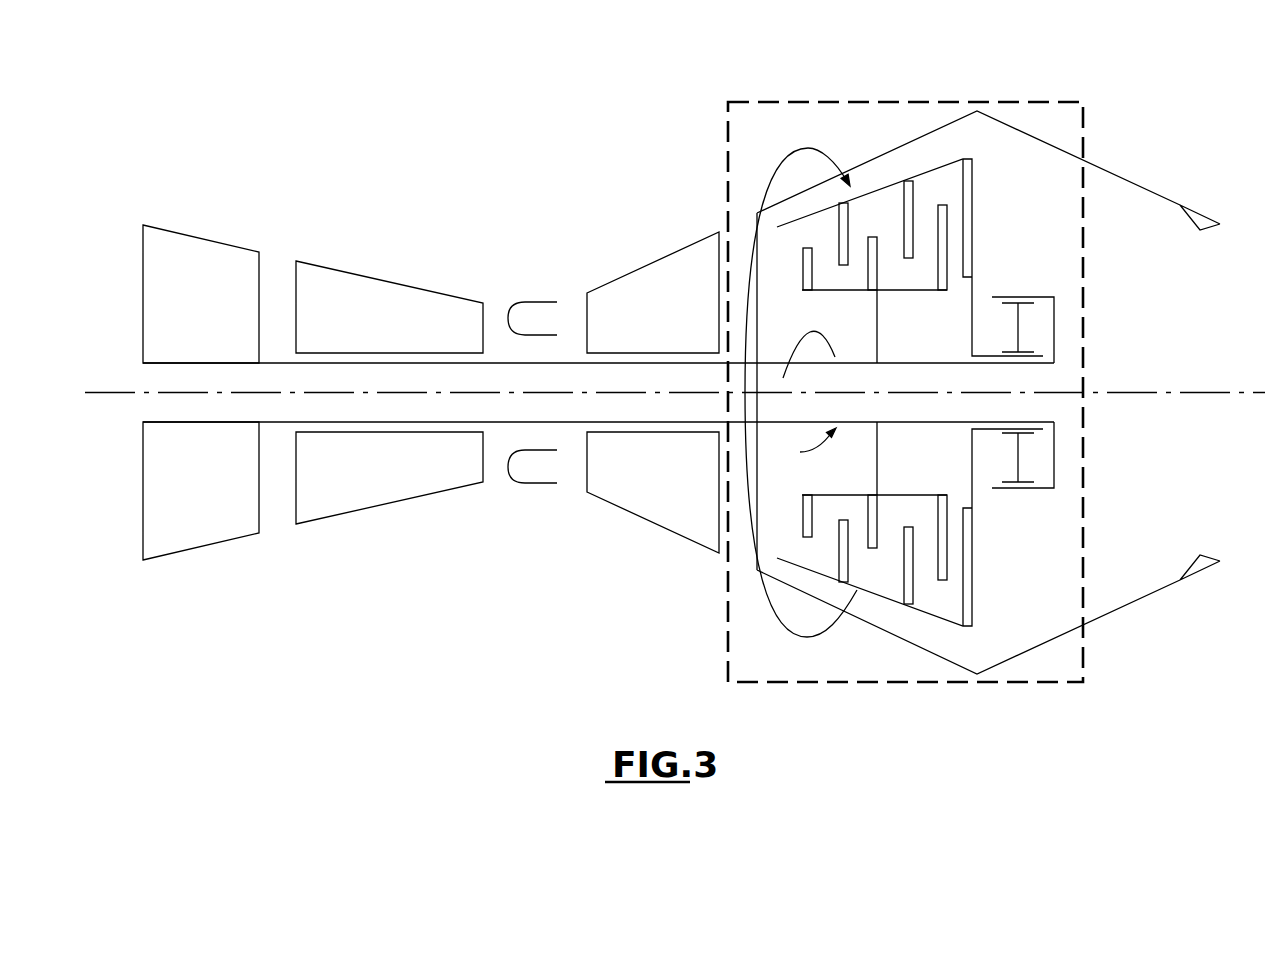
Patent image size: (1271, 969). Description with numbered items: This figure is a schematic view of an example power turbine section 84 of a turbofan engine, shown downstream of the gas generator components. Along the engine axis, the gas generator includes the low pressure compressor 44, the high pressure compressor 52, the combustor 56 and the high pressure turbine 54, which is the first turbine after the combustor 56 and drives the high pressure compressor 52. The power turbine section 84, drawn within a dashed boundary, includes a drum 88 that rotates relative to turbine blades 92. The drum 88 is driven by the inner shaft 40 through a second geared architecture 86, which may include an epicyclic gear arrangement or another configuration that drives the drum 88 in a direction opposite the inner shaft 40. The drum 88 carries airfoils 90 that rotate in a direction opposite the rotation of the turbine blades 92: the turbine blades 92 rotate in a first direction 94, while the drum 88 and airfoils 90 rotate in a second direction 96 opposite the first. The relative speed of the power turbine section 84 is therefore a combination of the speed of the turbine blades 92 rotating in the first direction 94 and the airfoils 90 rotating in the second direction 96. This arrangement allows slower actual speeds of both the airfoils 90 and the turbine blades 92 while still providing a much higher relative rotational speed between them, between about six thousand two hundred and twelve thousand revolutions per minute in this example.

The inner shaft 40 is at (1030, 422).
The low pressure compressor 44 is at (213, 259).
The high pressure compressor 52 is at (347, 288).
The high pressure turbine 54 is at (650, 272).
The combustor 56 is at (532, 317).
The power turbine section 84 is at (1041, 102).
The geared architecture 86 is at (1018, 328).
The drum 88 is at (937, 168).
The airfoils 90 is at (843, 225).
The turbine blades 92 is at (808, 272).
The first direction 94 is at (800, 452).
The second direction 96 is at (796, 148).